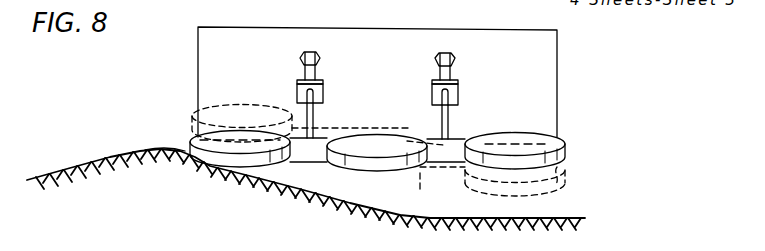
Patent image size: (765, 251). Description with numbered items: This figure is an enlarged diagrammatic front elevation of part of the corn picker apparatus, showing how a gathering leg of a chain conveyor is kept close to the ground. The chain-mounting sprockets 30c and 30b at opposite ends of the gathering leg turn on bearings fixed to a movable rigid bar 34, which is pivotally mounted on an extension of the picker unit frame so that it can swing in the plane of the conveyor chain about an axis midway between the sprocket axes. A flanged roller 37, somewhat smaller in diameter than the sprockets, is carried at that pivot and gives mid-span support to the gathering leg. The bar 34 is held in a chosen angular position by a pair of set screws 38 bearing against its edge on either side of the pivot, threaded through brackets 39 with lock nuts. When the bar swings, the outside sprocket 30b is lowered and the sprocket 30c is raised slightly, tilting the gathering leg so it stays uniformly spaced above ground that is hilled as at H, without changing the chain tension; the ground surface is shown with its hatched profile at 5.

The ground surface 5 is at (336, 194).
The hilled ground surface H is at (226, 172).
The movable rigid bar 34 is at (424, 195).
The flanged roller 37 is at (385, 146).
The set screws 38 is at (438, 61).
The brackets 39 is at (432, 88).
The chain-mounting sprocket 30c is at (193, 129).
The chain-mounting sprocket 30b is at (567, 166).